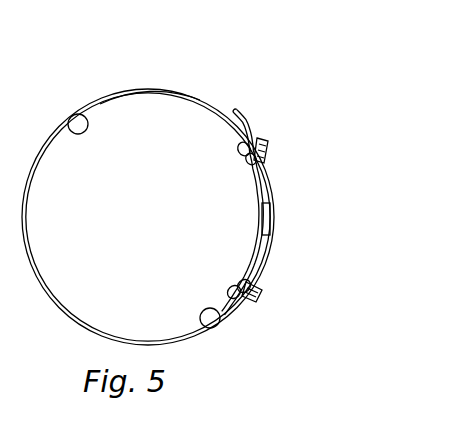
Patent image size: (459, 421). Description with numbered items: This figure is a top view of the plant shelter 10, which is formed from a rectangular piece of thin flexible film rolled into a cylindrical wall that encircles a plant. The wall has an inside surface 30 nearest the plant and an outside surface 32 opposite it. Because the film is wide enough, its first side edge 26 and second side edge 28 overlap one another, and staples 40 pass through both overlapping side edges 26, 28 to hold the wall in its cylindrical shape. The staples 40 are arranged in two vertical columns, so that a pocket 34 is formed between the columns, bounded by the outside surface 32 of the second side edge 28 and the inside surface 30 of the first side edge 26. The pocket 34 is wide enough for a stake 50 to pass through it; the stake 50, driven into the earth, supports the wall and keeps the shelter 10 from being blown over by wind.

The plant shelter 10 is at (193, 60).
The first side edge 26 is at (257, 84).
The second side edge 28 is at (212, 327).
The inside surface 30 is at (66, 128).
The outside surface 32 is at (113, 93).
The pocket 34 is at (262, 250).
The staples 40 is at (255, 150).
The stake 50 is at (265, 213).